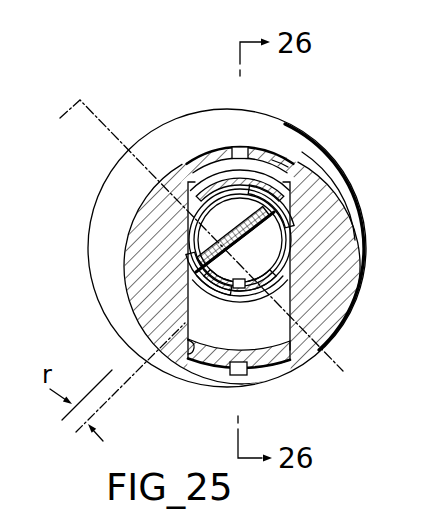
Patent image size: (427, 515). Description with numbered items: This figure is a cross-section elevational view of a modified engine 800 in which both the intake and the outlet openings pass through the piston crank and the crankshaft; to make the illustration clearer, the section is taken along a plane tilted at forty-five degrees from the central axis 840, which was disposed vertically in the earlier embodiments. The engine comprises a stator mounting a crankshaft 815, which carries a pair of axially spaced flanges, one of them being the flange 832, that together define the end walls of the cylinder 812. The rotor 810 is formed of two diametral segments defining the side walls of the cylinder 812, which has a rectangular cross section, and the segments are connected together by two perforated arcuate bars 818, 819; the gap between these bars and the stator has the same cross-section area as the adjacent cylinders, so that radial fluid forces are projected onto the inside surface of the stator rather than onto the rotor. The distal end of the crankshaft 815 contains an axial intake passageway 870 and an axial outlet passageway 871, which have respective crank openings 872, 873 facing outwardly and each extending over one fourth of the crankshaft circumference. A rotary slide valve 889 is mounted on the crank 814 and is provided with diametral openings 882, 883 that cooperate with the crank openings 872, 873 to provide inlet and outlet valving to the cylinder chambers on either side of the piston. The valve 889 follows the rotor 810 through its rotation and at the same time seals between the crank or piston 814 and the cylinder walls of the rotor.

The engine 800 is at (124, 51).
The rotor 810 is at (145, 220).
The cylinder 812 is at (190, 356).
The crank 814 is at (296, 178).
The crankshaft 815 is at (356, 218).
The perforated arcuate bar 818 is at (282, 161).
The perforated arcuate bar 819 is at (257, 362).
The flange 832 is at (350, 193).
The central axis 840 is at (188, 235).
The axial intake passageway 870 is at (224, 184).
The axial outlet passageway 871 is at (256, 282).
The crank opening 872 is at (189, 169).
The crank opening 873 is at (284, 297).
The diametral opening 882 is at (277, 165).
The diametral opening 883 is at (236, 296).
The rotary slide valve 889 is at (189, 271).